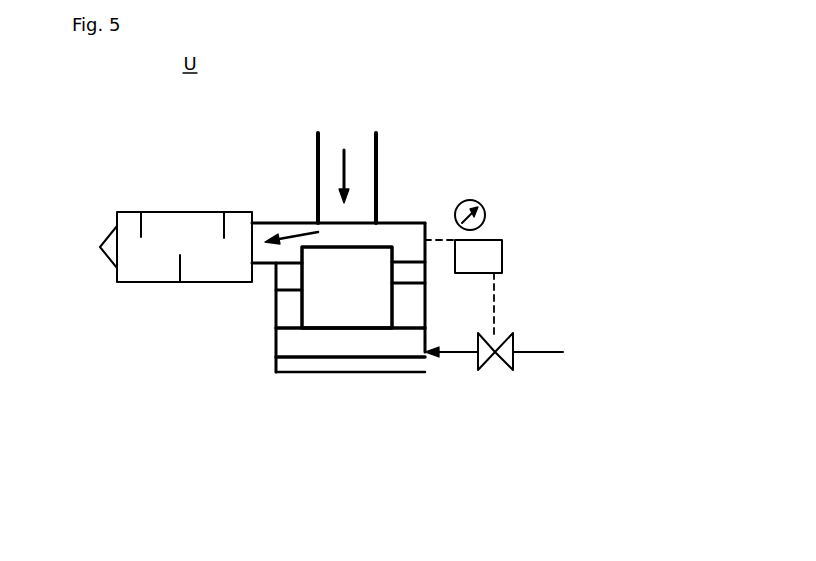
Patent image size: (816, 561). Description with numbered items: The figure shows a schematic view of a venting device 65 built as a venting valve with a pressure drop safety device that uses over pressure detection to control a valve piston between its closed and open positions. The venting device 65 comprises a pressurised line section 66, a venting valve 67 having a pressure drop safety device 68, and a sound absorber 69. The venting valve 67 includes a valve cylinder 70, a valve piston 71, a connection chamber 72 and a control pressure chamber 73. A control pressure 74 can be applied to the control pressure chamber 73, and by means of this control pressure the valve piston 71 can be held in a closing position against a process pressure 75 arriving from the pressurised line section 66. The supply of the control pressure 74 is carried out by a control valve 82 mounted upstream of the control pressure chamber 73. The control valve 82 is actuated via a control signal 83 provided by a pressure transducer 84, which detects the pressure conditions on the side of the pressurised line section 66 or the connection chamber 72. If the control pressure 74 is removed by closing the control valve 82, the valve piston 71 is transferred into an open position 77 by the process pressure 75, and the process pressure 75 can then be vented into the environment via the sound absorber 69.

The venting device 65 is at (556, 82).
The pressurised line section 66 is at (380, 155).
The venting valve 67 is at (224, 346).
The pressure drop safety device 68 is at (507, 431).
The sound absorber 69 is at (160, 212).
The valve cylinder 70 is at (294, 387).
The valve piston 71 is at (336, 293).
The connection chamber 72 is at (402, 235).
The control pressure chamber 73 is at (389, 342).
The control pressure 74 is at (449, 353).
The process pressure 75 is at (347, 153).
The open position 77 is at (281, 95).
The control valve 82 is at (513, 362).
The control signal 83 is at (495, 305).
The pressure transducer 84 is at (492, 252).